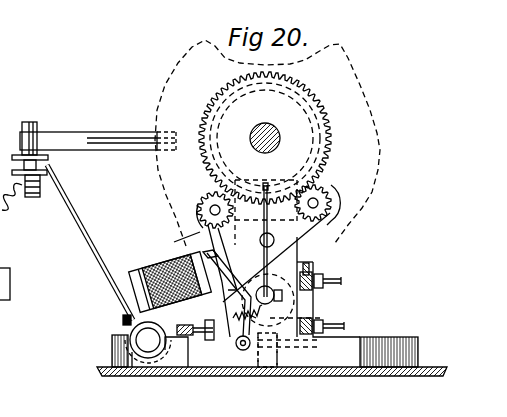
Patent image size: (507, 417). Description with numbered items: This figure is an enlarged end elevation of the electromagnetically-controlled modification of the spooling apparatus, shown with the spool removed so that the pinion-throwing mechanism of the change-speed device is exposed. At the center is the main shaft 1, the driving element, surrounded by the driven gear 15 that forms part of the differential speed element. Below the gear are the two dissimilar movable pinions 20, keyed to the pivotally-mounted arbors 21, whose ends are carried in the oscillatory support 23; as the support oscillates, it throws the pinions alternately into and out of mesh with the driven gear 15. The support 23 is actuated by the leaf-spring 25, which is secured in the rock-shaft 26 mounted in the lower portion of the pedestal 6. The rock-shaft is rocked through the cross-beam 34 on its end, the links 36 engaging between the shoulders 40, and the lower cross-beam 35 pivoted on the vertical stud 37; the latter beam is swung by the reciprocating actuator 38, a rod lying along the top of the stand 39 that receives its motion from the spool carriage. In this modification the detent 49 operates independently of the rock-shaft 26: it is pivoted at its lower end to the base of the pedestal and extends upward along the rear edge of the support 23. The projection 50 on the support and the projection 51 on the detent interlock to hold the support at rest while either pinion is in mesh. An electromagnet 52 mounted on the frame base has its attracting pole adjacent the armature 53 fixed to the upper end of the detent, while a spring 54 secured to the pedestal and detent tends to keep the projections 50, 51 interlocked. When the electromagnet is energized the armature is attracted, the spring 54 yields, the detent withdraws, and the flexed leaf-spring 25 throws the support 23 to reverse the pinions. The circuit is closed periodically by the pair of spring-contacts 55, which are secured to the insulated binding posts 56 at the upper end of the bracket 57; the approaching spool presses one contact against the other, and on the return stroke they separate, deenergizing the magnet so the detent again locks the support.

The main shaft 1 is at (280, 140).
The driven gear 15 is at (219, 96).
The movable pinions 20 is at (329, 203).
The arbors 21 is at (207, 200).
The oscillatory support 23 is at (300, 243).
The leaf-spring 25 is at (261, 240).
The rock-shaft 26 is at (270, 310).
The cross-beam 34 is at (342, 279).
The cross-beam 35 is at (345, 326).
The links 36 is at (316, 305).
The stud 37 is at (258, 378).
The reciprocating actuator 38 is at (184, 334).
The stand 39 is at (188, 372).
The shoulders 40 is at (310, 270).
The detent 49 is at (220, 285).
The projection 50 is at (218, 252).
The projection 51 is at (206, 253).
The electromagnet 52 is at (161, 262).
The armature 53 is at (176, 250).
The spring 54 is at (253, 313).
The spring-contacts 55 is at (103, 131).
The binding posts 56 is at (36, 193).
The bracket 57 is at (98, 252).
The pedestal 6 is at (276, 298).